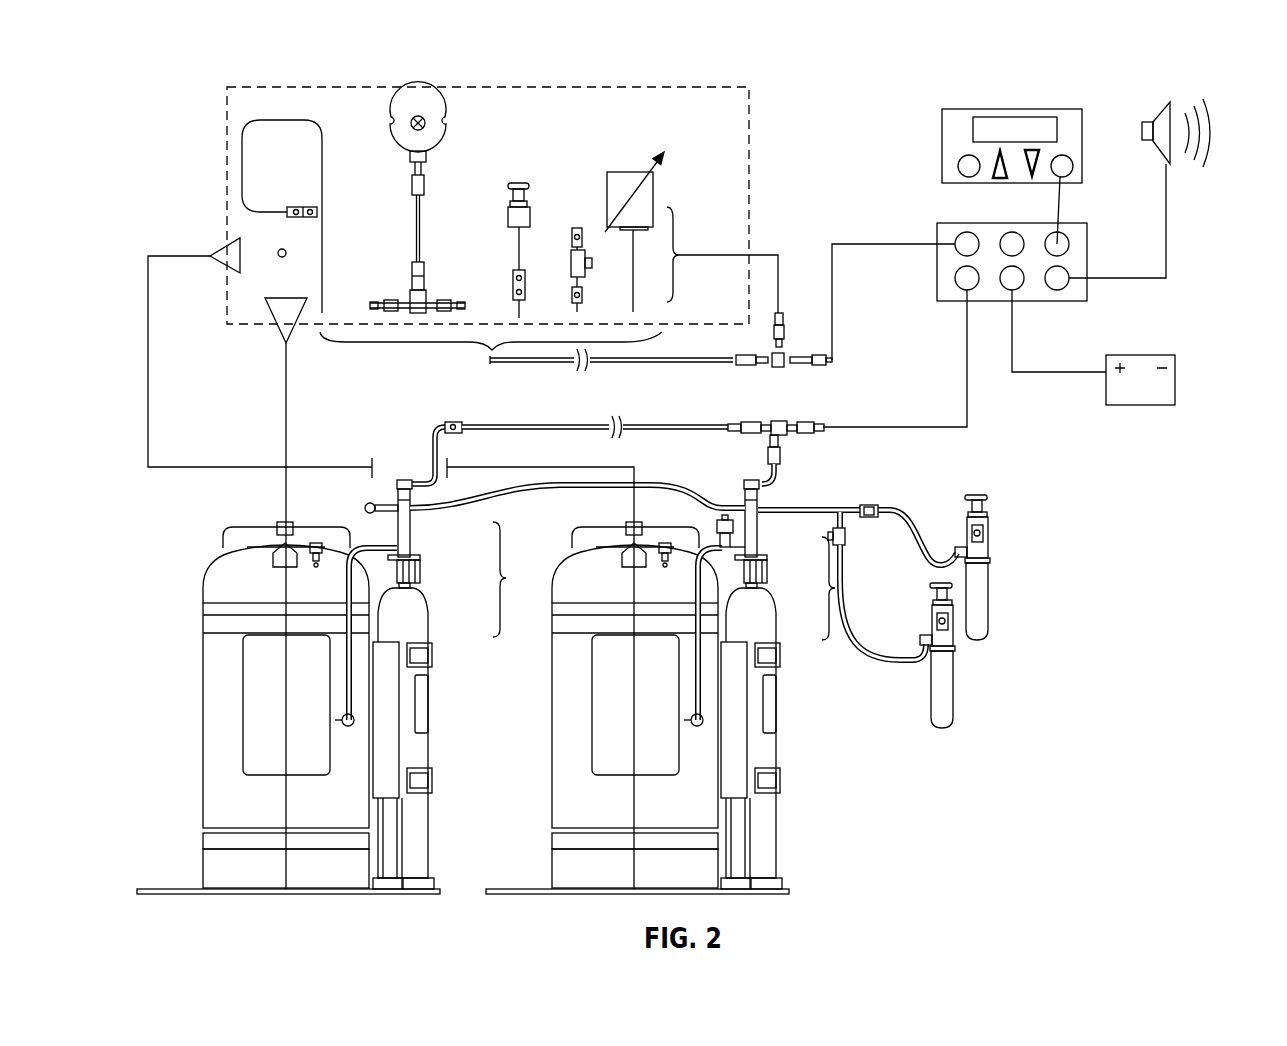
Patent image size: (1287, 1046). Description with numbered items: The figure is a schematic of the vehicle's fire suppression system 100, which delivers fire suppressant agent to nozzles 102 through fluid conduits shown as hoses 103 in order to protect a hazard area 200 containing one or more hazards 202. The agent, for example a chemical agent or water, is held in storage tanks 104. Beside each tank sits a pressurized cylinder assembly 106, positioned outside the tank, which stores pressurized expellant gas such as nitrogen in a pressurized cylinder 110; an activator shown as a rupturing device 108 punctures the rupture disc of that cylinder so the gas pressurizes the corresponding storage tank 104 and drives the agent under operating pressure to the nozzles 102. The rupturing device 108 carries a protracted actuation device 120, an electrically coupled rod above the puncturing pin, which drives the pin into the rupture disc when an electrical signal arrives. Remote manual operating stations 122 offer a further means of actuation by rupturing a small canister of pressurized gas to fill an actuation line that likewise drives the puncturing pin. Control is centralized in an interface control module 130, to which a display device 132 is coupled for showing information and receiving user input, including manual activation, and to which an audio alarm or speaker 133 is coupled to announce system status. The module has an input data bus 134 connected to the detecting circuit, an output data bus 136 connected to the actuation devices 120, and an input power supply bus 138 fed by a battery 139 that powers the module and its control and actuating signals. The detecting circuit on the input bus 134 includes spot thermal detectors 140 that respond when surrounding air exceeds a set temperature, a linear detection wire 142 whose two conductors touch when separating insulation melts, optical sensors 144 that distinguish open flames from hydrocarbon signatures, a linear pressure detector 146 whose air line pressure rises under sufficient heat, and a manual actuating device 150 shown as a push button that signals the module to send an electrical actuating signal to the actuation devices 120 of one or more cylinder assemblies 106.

The fire suppression system 100 is at (1012, 420).
The nozzle 102 is at (237, 252).
The hose 103 is at (180, 466).
The storage tank 104 is at (227, 575).
The pressurized cylinder assembly 106 is at (878, 568).
The rupturing device 108 is at (405, 528).
The pressurized cylinder 110 is at (420, 627).
The protracted actuation device 120 is at (403, 480).
The remote manual operating station 122 is at (985, 533).
The interface control module 130 is at (1078, 289).
The display device 132 is at (1075, 179).
The speaker 133 is at (1172, 160).
The input data bus 134 is at (900, 243).
The output data bus 136 is at (898, 427).
The input power supply bus 138 is at (1013, 317).
The battery 139 is at (1140, 405).
The spot thermal detector 140 is at (572, 263).
The linear detection wire 142 is at (242, 163).
The optical sensor 144 is at (445, 122).
The linear pressure detector 146 is at (647, 196).
The manual actuating device 150 is at (520, 184).
The hazard area 200 is at (293, 87).
The hazard 202 is at (285, 257).